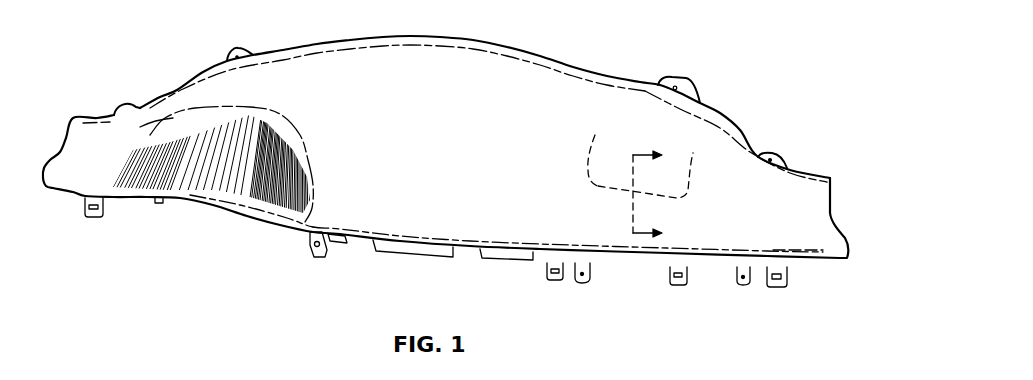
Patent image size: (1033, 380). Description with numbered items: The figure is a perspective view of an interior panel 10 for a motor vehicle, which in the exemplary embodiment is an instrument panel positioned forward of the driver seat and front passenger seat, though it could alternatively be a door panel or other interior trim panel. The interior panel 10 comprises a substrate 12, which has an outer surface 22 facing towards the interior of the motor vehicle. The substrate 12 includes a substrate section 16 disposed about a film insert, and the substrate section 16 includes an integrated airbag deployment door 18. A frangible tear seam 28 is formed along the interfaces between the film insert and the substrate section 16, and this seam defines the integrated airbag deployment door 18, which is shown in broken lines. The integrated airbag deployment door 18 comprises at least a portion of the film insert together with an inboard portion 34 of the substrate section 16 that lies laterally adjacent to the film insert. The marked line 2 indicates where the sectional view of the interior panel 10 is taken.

The interior panel 10 is at (744, 30).
The substrate 12 is at (730, 127).
The substrate section 16 is at (777, 190).
The integrated airbag deployment door 18 is at (620, 170).
The outer surface 22 is at (743, 233).
The frangible tear seam 28 is at (593, 155).
The inboard portion 34 is at (680, 170).
The line 2- 2 is at (656, 196).